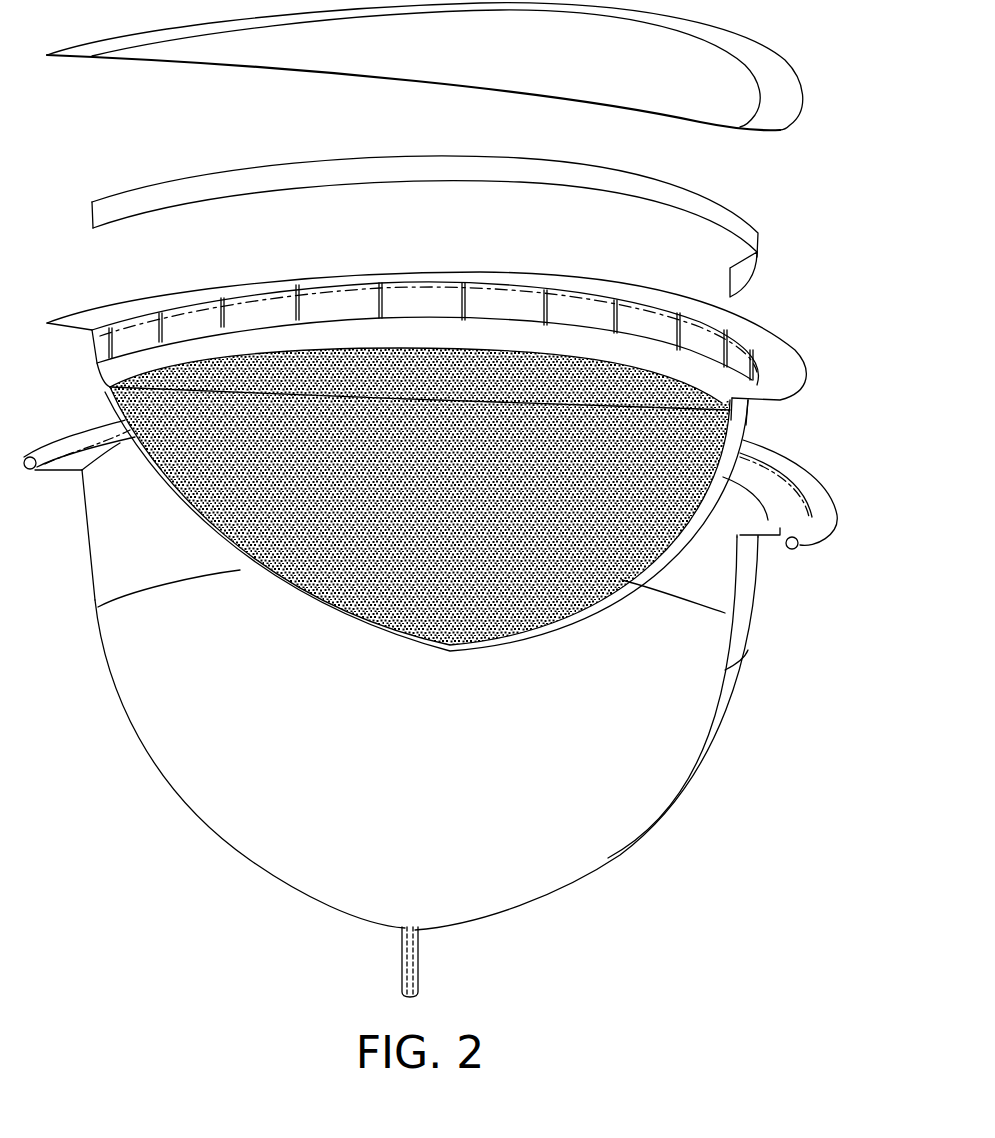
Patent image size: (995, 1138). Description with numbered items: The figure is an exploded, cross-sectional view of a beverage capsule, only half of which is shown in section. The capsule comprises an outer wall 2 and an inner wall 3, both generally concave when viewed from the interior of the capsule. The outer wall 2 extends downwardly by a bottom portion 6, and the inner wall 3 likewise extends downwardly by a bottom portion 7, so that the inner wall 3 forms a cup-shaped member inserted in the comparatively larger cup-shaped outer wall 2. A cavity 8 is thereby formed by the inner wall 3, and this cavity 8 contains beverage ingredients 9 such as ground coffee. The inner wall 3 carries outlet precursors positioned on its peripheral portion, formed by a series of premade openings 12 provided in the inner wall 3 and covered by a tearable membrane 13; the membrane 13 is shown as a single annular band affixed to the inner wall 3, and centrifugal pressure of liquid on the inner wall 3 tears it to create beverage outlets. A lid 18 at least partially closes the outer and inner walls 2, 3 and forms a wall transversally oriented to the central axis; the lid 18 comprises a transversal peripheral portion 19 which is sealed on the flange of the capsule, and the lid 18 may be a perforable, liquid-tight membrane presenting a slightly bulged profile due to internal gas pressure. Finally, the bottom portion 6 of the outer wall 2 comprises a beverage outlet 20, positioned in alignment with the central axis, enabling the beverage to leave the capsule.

The outer wall 2 is at (430, 708).
The inner wall 3 is at (743, 458).
The bottom portion 6 is at (92, 688).
The bottom portion 7 is at (137, 473).
The cavity 8 is at (707, 375).
The beverage ingredients 9 is at (670, 497).
The premade openings 12 is at (113, 330).
The tearable membrane 13 is at (117, 200).
The lid 18 is at (694, 76).
The transversal peripheral portion 19 is at (794, 89).
The beverage outlet 20 is at (419, 966).